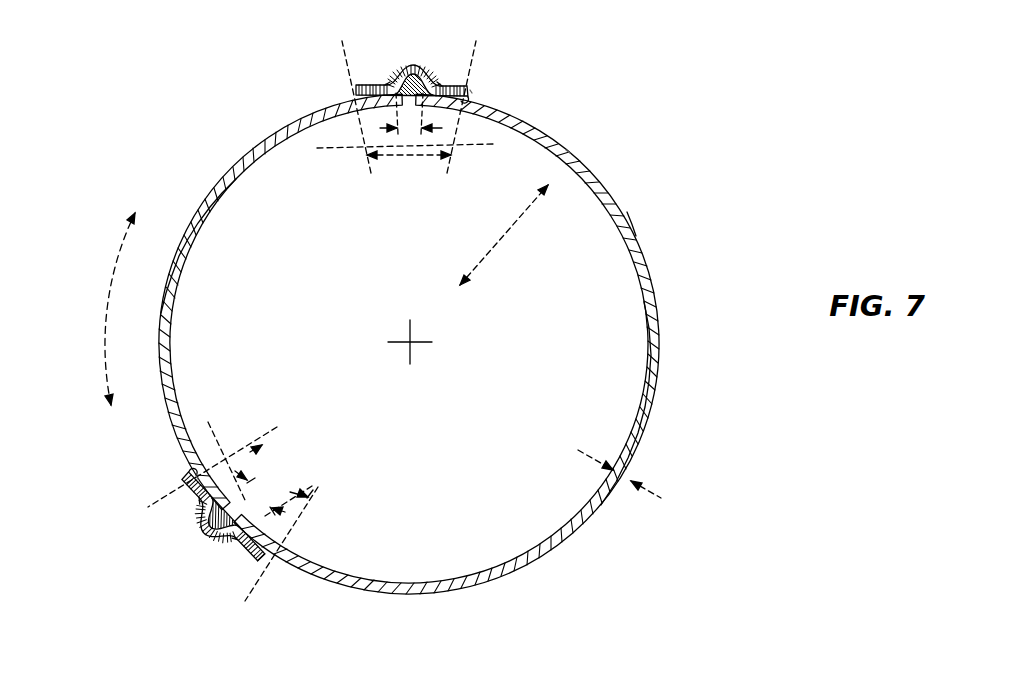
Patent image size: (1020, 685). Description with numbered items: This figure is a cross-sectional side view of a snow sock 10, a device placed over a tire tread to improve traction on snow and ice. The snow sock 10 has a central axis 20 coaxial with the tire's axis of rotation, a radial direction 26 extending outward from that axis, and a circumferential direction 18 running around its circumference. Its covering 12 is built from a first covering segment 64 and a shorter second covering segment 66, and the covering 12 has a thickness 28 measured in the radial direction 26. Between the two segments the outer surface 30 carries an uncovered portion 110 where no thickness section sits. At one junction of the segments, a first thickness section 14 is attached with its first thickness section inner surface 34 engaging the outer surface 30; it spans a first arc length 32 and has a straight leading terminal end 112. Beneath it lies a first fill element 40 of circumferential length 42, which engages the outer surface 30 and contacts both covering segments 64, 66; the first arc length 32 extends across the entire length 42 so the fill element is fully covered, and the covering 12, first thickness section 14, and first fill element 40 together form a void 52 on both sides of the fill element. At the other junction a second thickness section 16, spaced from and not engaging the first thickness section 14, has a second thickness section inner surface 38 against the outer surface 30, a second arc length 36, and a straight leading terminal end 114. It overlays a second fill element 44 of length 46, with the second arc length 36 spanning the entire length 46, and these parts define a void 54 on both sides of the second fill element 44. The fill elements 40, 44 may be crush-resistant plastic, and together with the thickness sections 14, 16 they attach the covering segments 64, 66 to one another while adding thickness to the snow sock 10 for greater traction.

The snow sock 10 is at (666, 66).
The covering 12 is at (660, 312).
The first thickness section 14 is at (408, 53).
The second thickness section 16 is at (185, 520).
The circumferential direction 18 is at (108, 312).
The central axis 20 is at (420, 342).
The radial direction 26 is at (508, 236).
The thickness 28 is at (653, 494).
The outer surface 30 is at (630, 224).
The first arc length 32 is at (400, 158).
The first thickness section inner surface 34 is at (462, 100).
The second arc length 36 is at (285, 481).
The second thickness section inner surface 38 is at (200, 470).
The first fill element 40 is at (413, 71).
The length 42 is at (377, 132).
The second fill element 44 is at (212, 531).
The length 46 is at (283, 511).
The void 52 is at (390, 80).
The void 54 is at (213, 515).
The first covering segment 64 is at (193, 244).
The second covering segment 66 is at (641, 405).
The uncovered portion 110 is at (568, 150).
The leading terminal end 112 is at (470, 90).
The leading terminal end 114 is at (196, 476).